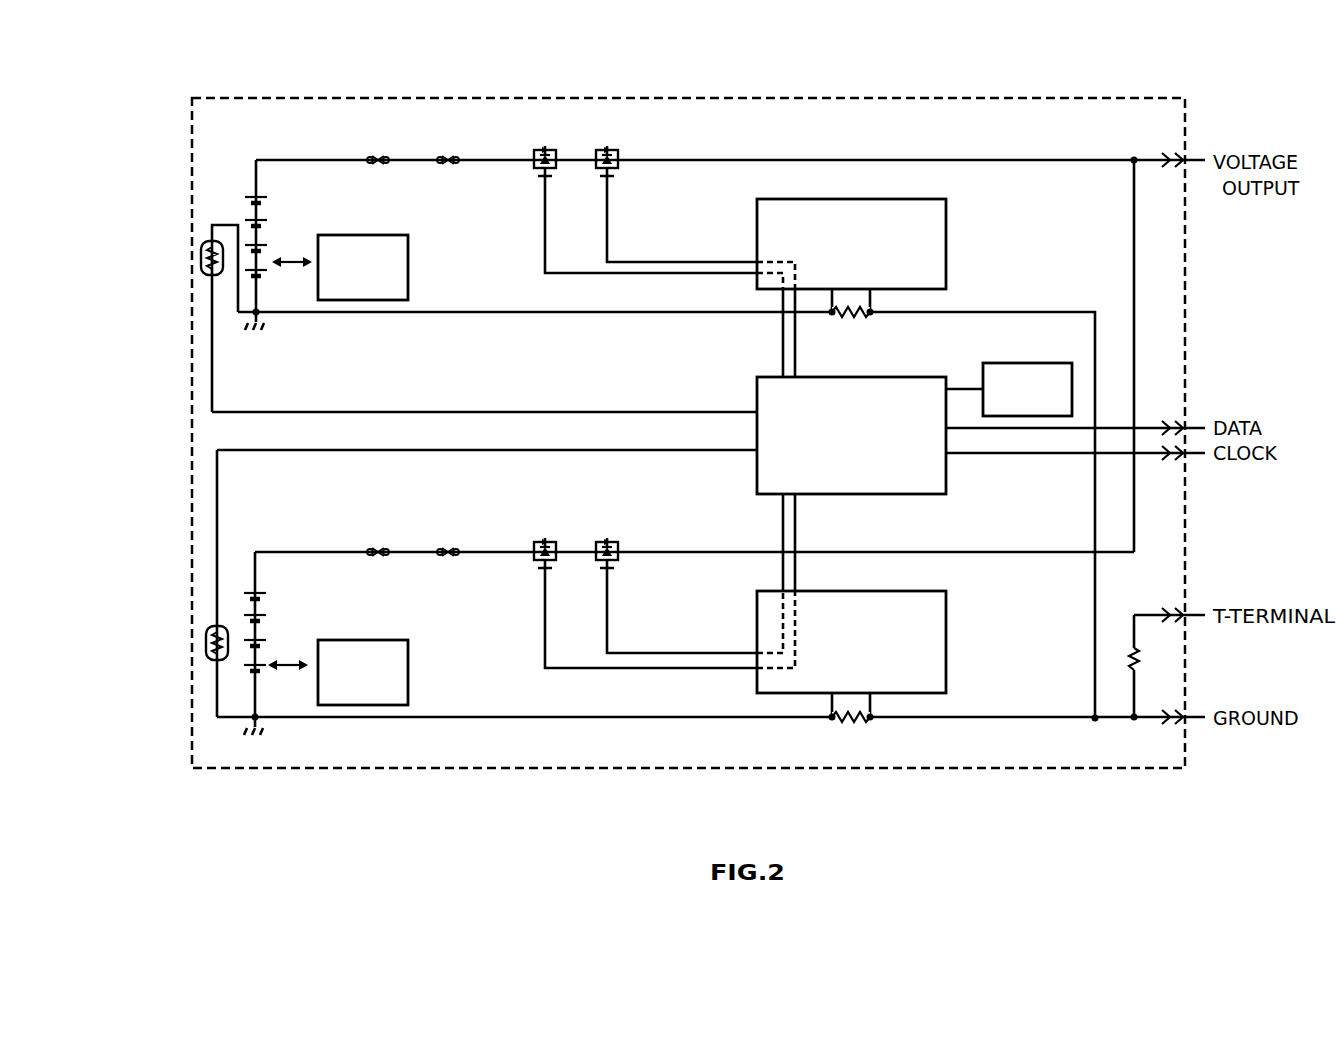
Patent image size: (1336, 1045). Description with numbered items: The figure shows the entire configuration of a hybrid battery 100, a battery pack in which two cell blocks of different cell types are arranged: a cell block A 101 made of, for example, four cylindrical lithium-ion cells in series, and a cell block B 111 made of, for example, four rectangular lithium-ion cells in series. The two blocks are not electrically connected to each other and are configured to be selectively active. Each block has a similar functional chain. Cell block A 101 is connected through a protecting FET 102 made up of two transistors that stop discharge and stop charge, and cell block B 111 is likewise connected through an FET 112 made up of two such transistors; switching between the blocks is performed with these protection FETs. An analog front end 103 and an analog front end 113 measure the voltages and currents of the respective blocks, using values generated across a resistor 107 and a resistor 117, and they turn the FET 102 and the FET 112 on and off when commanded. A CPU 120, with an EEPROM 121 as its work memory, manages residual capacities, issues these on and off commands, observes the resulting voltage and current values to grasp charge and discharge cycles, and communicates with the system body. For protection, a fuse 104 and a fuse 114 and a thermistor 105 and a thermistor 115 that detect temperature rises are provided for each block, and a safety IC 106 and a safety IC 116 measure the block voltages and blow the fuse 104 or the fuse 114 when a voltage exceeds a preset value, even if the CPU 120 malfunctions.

The hybrid battery 100 is at (1046, 98).
The cell block A 101 is at (270, 188).
The FET 102 is at (658, 150).
The analog front end 103 is at (946, 237).
The fuse 104 is at (408, 150).
The thermistor 105 is at (200, 272).
The safety IC 106 is at (408, 268).
The resistor 107 is at (853, 320).
The cell block B 111 is at (270, 684).
The FET 112 is at (571, 517).
The analog front end 113 is at (946, 640).
The fuse 114 is at (407, 546).
The thermistor 115 is at (205, 652).
The safety IC 116 is at (408, 670).
The resistor 117 is at (862, 722).
The CPU 120 is at (890, 377).
The EEPROM 121 is at (1062, 346).